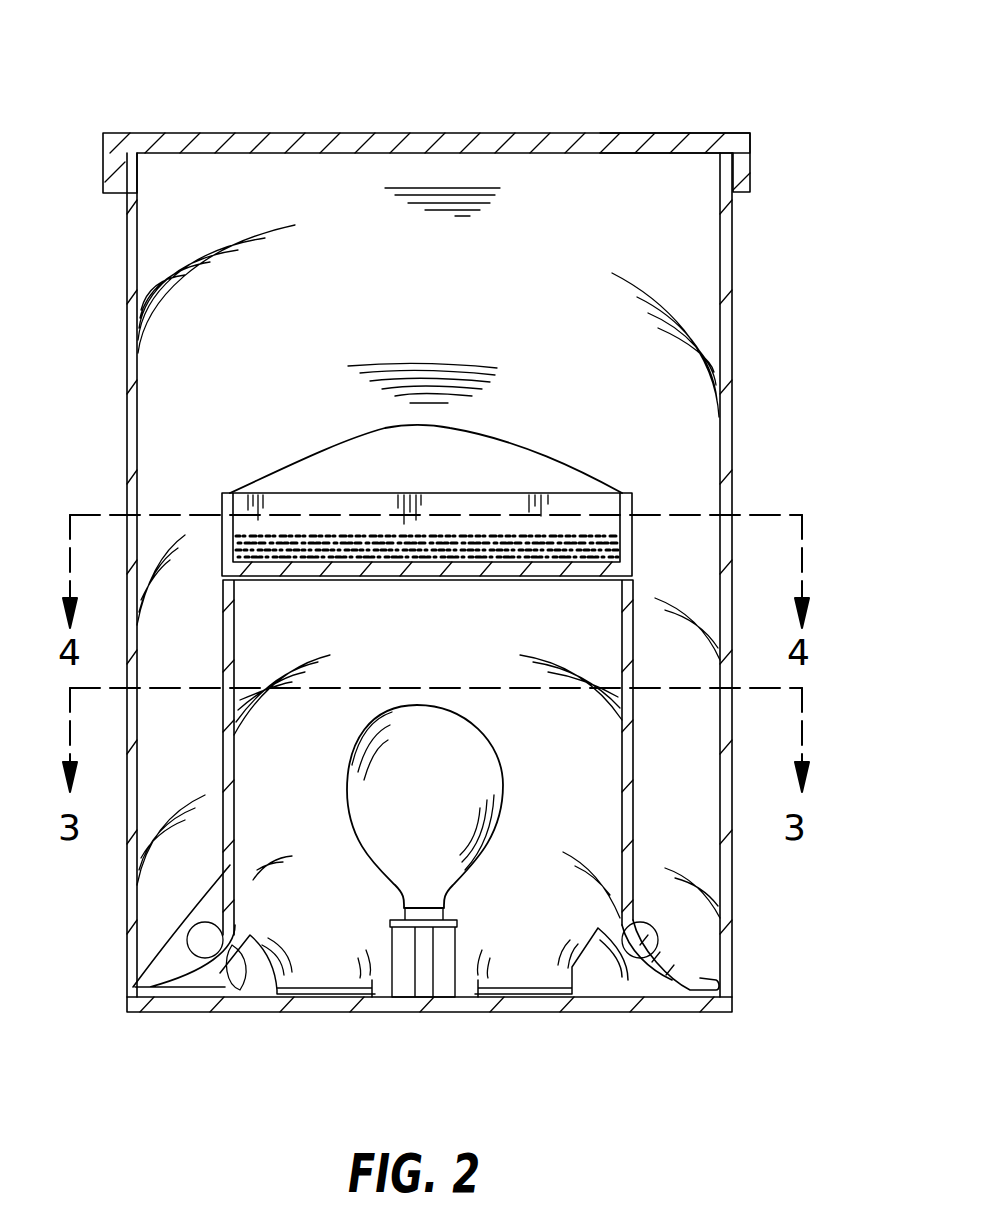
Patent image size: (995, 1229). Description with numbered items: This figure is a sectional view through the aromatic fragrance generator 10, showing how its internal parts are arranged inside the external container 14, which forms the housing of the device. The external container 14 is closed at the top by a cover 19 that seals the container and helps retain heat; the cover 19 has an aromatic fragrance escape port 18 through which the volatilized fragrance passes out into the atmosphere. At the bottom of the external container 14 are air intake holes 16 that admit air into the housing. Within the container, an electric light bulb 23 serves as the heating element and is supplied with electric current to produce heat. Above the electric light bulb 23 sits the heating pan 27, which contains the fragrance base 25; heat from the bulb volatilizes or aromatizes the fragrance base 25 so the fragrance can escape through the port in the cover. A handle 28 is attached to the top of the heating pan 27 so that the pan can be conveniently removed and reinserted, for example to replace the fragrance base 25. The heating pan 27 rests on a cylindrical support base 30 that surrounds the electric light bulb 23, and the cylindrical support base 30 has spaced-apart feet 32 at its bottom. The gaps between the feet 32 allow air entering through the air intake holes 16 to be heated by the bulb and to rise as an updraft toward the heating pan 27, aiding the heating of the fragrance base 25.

The aromatic fragrance generator 10 is at (766, 345).
The external container 14 is at (733, 250).
The air intake holes 16 is at (650, 943).
The aromatic fragrance escape port 18 is at (440, 133).
The cover 19 is at (650, 133).
The electric light bulb 23 is at (453, 753).
The fragrance base 25 is at (622, 548).
The heating pan 27 is at (457, 493).
The handle 28 is at (325, 448).
The cylindrical support base 30 is at (633, 600).
The feet 32 is at (687, 973).